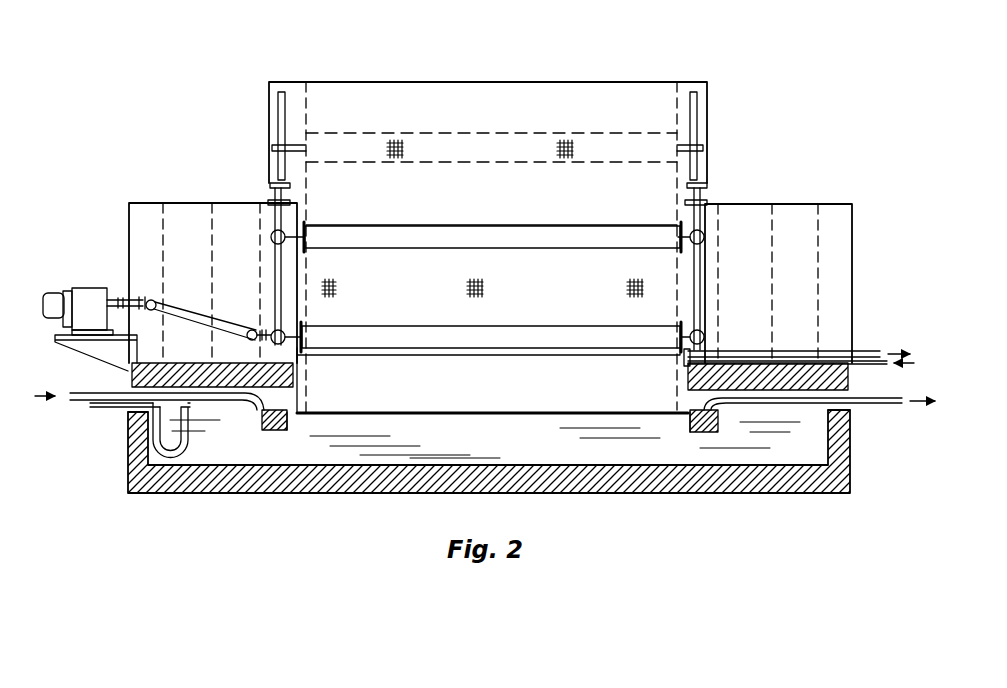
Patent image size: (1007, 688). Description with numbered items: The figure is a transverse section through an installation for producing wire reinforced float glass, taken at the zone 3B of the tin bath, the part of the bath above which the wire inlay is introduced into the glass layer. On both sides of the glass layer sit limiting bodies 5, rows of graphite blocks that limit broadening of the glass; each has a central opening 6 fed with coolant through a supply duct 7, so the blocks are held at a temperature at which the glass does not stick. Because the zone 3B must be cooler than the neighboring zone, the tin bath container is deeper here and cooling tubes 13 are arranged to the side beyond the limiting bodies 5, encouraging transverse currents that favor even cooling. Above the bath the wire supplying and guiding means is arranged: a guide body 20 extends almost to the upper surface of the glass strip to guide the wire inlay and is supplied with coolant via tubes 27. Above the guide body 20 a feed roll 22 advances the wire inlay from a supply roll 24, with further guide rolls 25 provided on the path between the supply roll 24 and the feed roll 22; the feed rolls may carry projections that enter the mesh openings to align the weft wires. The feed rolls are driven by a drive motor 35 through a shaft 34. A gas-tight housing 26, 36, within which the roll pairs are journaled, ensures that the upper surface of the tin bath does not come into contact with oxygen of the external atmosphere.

The zone of the tin bath 3B is at (502, 446).
The gas-tight housing 36 is at (147, 203).
The gas-tight housing 26 is at (502, 82).
The supply roll 24 is at (480, 148).
The guide rolls 25 is at (555, 240).
The feed roll 22 is at (574, 335).
The guide body 20 is at (379, 394).
The drive motor 35 is at (96, 297).
The shaft 34 is at (182, 316).
The coolant tubes 27 is at (879, 360).
The supply duct 7 is at (90, 395).
The cooling tubes 13 is at (100, 409).
The limiting bodies 5 is at (262, 427).
The central opening 6 is at (289, 426).